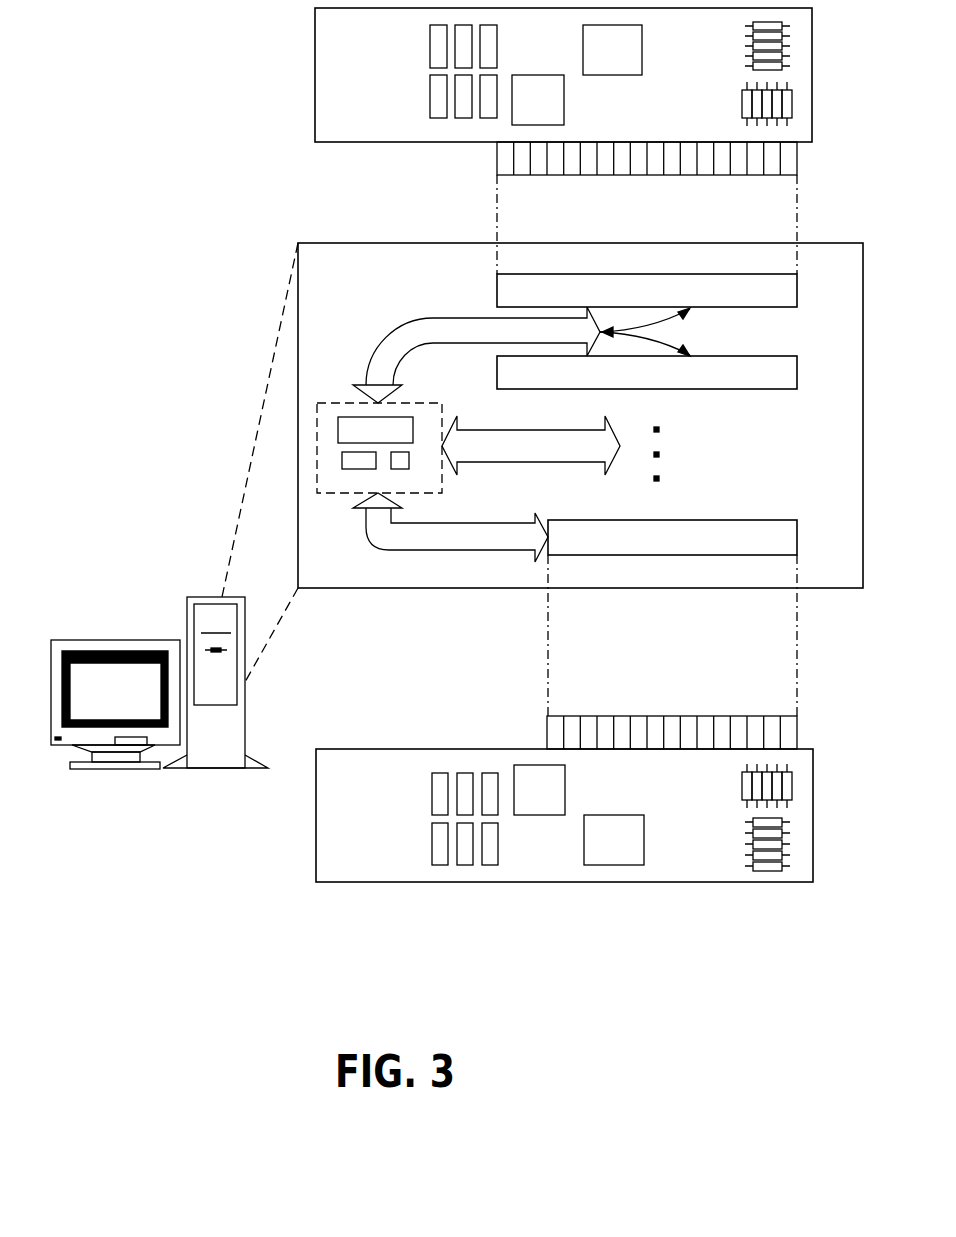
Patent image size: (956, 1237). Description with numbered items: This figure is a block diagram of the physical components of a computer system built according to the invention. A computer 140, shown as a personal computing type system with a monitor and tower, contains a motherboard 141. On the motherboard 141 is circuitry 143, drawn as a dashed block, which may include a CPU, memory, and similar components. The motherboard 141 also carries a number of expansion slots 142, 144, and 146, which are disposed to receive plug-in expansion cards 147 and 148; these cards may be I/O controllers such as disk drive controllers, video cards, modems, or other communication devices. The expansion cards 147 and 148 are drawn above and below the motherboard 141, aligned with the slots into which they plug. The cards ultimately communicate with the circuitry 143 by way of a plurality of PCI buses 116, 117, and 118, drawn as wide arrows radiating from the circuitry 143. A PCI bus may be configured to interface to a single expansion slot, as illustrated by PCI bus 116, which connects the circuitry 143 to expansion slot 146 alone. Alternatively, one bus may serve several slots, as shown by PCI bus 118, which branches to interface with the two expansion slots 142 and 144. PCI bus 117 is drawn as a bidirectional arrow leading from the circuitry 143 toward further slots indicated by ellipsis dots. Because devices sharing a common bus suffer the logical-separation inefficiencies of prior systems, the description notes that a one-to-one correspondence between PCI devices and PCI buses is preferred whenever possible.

The computer 140 is at (126, 549).
The motherboard 141 is at (365, 243).
The expansion slot 142 is at (664, 302).
The circuitry 143 is at (352, 402).
The expansion slot 144 is at (664, 384).
The expansion slot 146 is at (690, 550).
The expansion card 147 is at (415, 142).
The expansion card 148 is at (415, 749).
The PCI bus 116 is at (455, 523).
The PCI bus 117 is at (497, 430).
The PCI bus 118 is at (433, 318).